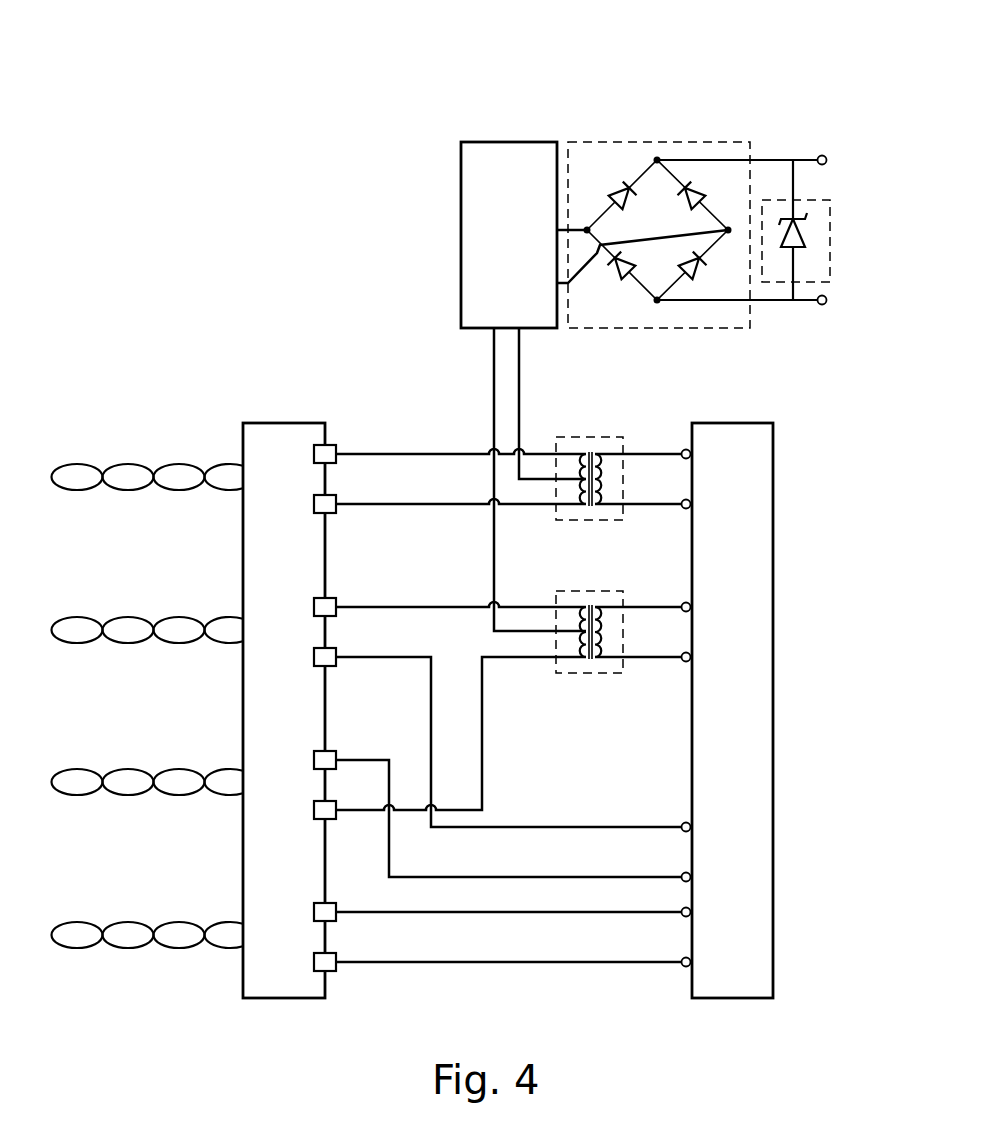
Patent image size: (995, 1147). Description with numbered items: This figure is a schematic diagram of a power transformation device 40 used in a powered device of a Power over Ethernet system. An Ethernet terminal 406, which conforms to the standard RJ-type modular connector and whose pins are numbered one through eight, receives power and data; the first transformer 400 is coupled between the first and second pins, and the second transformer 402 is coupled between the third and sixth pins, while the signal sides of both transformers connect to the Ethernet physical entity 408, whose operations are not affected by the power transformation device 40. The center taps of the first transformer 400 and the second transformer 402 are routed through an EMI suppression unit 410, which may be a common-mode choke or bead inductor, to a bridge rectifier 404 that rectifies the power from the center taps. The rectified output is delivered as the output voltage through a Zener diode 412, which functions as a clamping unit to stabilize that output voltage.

The power transformation device 40 is at (268, 55).
The first transformer 400 is at (590, 437).
The second transformer 402 is at (590, 591).
The bridge rectifier 404 is at (688, 142).
The Ethernet terminal 406 is at (283, 423).
The Ethernet physical entity 408 is at (733, 423).
The EMI suppression unit 410 is at (473, 142).
The Zener diode 412 is at (812, 200).